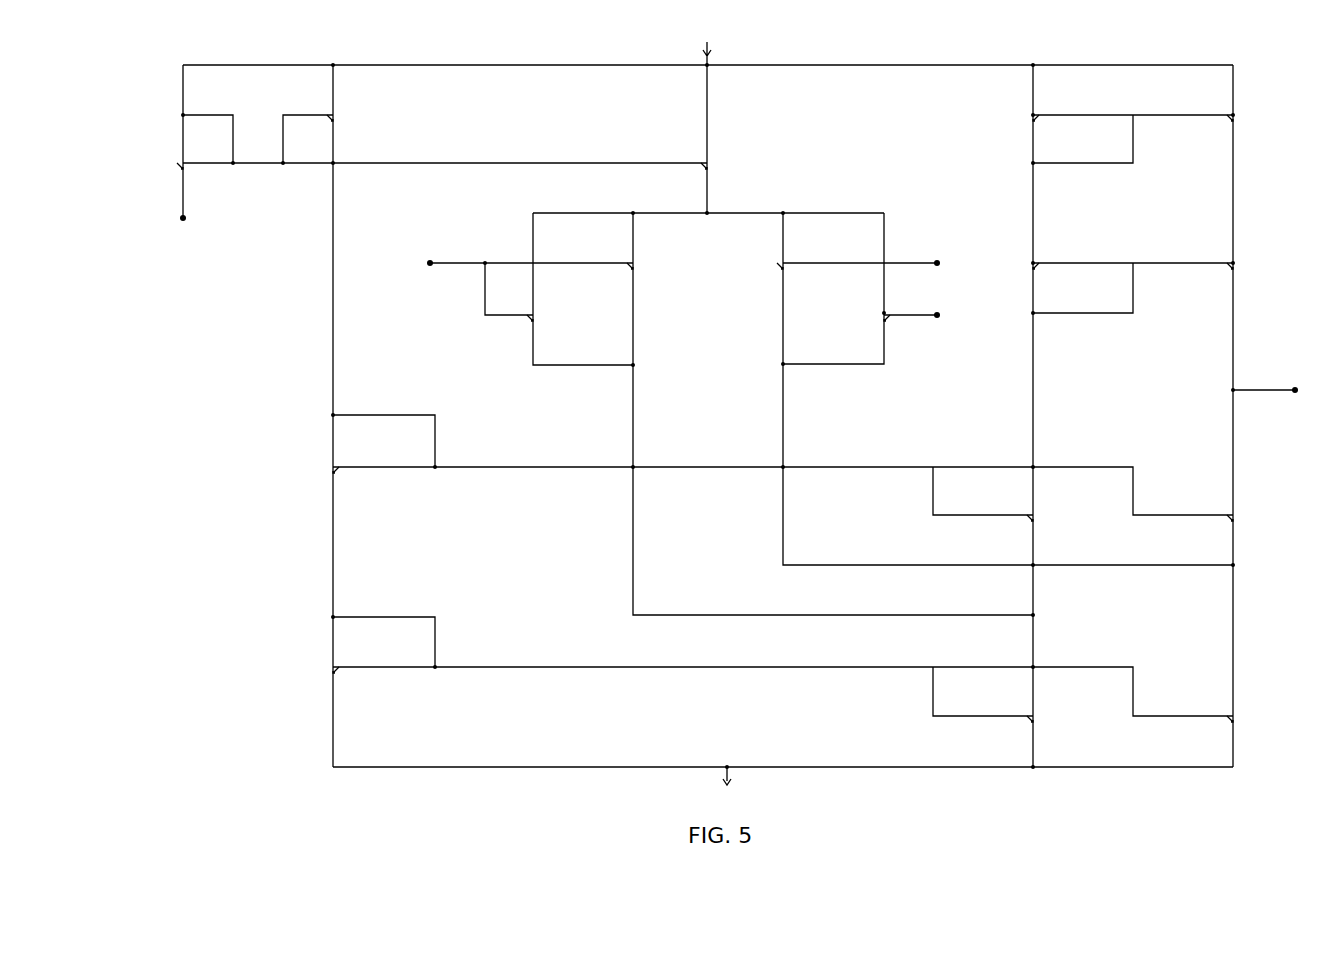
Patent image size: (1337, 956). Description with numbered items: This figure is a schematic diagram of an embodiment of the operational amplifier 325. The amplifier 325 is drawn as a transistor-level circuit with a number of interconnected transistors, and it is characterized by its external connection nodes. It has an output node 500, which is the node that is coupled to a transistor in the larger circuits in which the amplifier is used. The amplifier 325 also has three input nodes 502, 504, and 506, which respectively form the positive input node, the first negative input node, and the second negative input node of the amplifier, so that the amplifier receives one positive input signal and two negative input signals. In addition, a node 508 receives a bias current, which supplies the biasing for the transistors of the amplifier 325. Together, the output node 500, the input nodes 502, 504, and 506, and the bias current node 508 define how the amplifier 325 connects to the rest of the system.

The operational amplifier 325 is at (306, 762).
The output node 500 is at (1238, 383).
The input node 502 is at (433, 258).
The input node 504 is at (917, 322).
The input node 506 is at (893, 258).
The node 508 is at (190, 188).